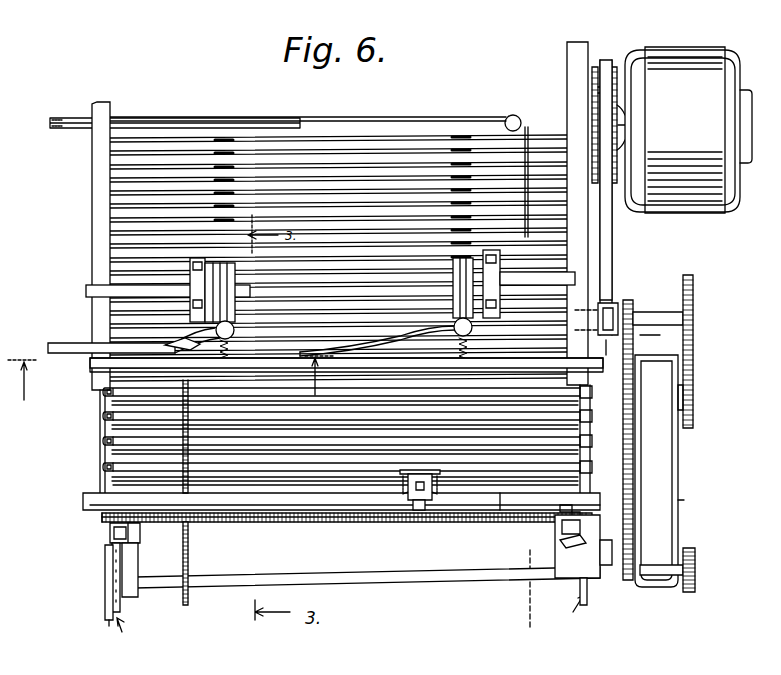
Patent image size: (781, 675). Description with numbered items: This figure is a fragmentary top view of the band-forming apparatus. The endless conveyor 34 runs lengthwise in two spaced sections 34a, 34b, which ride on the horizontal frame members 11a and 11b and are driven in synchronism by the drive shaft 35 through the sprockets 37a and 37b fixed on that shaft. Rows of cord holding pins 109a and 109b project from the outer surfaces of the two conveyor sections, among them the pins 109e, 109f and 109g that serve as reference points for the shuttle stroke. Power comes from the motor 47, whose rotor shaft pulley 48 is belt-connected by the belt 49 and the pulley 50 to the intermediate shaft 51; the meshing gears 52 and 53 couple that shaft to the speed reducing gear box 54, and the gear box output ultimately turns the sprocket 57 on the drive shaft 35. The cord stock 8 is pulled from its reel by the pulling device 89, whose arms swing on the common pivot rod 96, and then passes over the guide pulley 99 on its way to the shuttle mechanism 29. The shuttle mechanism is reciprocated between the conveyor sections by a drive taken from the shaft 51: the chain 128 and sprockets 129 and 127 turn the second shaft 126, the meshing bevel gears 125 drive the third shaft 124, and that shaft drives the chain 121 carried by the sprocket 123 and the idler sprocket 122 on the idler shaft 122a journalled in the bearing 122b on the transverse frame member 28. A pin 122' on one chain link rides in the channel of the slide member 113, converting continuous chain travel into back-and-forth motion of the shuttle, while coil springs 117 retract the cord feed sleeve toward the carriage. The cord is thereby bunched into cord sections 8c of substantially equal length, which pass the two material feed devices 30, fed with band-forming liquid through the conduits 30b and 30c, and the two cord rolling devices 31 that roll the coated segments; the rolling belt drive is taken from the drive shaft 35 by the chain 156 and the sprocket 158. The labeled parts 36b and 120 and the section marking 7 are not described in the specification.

The section line 7 is at (592, 312).
The cord stock 8 is at (522, 650).
The cord sections 8c is at (500, 512).
The horizontally disposed frame member 11a is at (588, 378).
The frame member 11b is at (92, 180).
The transversely extending frame member 28 is at (282, 524).
The shuttle mechanism 29 is at (446, 496).
The material feed devices 30 is at (75, 345).
The conduit 30b is at (170, 342).
The conduit 30c is at (345, 352).
The cord segment rolling devices 31 is at (180, 272).
The endless conveyor 34 is at (349, 634).
The conveyor section 34a is at (592, 418).
The conveyor section 34b is at (105, 398).
The drive shaft 35 is at (375, 580).
The slide block 36b is at (138, 595).
The drive sprocket 37a is at (587, 602).
The sprocket 37b is at (105, 600).
The motor 47 is at (715, 48).
The rotor shaft pulley 48 is at (130, 364).
The belt 49 is at (612, 238).
The pulley 50 is at (633, 300).
The intermediate shaft 51 is at (660, 316).
The gear 52 is at (694, 348).
The gear 53 is at (694, 376).
The speed reducing gear box 54 is at (678, 480).
The sprocket 57 is at (697, 582).
The pulling device 89 is at (616, 300).
The common pivot rod 96 is at (516, 112).
The guide pulley 99 is at (58, 118).
The cord holding pins 109a is at (592, 441).
The cord holding pins 109b is at (105, 466).
The pin 109e is at (600, 468).
The pin 109f is at (105, 489).
The pin 109g is at (83, 494).
The slide member 113 is at (413, 508).
The coil springs 117 is at (400, 480).
The carriage beam 120 is at (262, 506).
The chain 121 is at (325, 524).
The sprocket 122 is at (81, 540).
The pin 122' is at (435, 516).
The idler shaft 122a is at (140, 535).
The bearing 122b is at (112, 536).
The sprocket 123 is at (560, 510).
The third shaft 124 is at (572, 518).
The bevel gears 125 is at (590, 548).
The second shaft 126 is at (620, 572).
The sprocket 127 is at (648, 546).
The chain 128 is at (680, 502).
The sprocket 129 is at (633, 340).
The chain 156 is at (190, 485).
The sprocket 158 is at (188, 604).